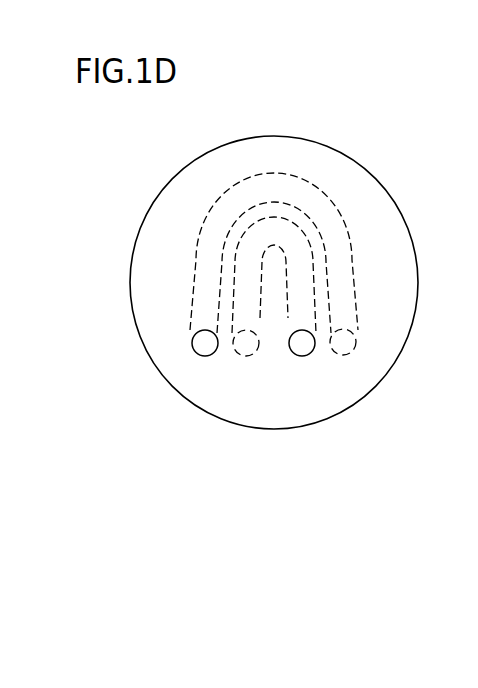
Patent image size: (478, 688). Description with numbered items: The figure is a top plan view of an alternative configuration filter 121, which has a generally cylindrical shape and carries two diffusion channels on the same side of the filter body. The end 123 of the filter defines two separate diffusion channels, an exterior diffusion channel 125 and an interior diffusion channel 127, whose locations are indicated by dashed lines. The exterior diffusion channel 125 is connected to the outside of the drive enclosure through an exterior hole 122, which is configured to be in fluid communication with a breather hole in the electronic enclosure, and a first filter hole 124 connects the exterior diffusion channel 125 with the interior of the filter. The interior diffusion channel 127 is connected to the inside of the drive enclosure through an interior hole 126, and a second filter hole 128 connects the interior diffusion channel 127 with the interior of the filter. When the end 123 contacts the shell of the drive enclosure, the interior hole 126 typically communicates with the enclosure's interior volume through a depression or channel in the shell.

The filter 121 is at (363, 115).
The exterior hole 122 is at (205, 350).
The end 123 is at (160, 243).
The first filter hole 124 is at (342, 350).
The exterior diffusion channel 125 is at (337, 260).
The interior hole 126 is at (300, 350).
The interior diffusion channel 127 is at (252, 313).
The second filter hole 128 is at (245, 350).